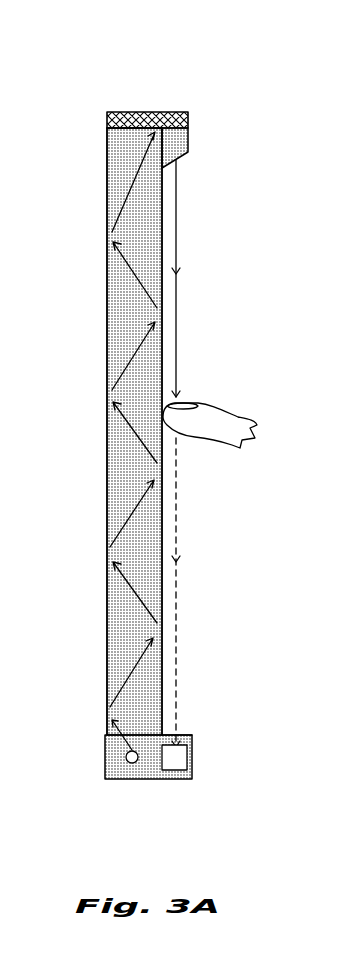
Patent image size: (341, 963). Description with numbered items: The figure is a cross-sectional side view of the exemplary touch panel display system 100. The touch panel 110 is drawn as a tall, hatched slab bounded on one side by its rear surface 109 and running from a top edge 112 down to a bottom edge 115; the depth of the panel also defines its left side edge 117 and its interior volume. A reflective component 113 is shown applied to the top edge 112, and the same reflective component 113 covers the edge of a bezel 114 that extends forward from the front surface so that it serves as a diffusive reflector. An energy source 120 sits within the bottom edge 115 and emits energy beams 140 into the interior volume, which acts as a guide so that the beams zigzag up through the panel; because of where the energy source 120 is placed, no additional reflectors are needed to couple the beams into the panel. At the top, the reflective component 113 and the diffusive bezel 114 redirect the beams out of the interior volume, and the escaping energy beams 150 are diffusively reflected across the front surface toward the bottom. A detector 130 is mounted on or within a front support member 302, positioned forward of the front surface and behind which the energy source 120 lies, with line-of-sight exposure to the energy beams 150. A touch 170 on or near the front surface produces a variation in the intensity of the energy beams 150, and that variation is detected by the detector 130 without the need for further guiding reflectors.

The touch panel display system 100 is at (207, 73).
The rear surface 109 is at (106, 432).
The touch panel 110 is at (81, 333).
The top edge 112 is at (139, 130).
The reflective component 113 is at (156, 111).
The bezel 114 is at (188, 142).
The bottom edge 115 is at (140, 781).
The left side edge 117 is at (116, 268).
The energy source 120 is at (126, 757).
The detector 130 is at (182, 762).
The energy beams 140 is at (134, 506).
The energy beams reflected across the front surface 150 is at (178, 235).
The touch 170 is at (182, 402).
The front support member 302 is at (194, 738).